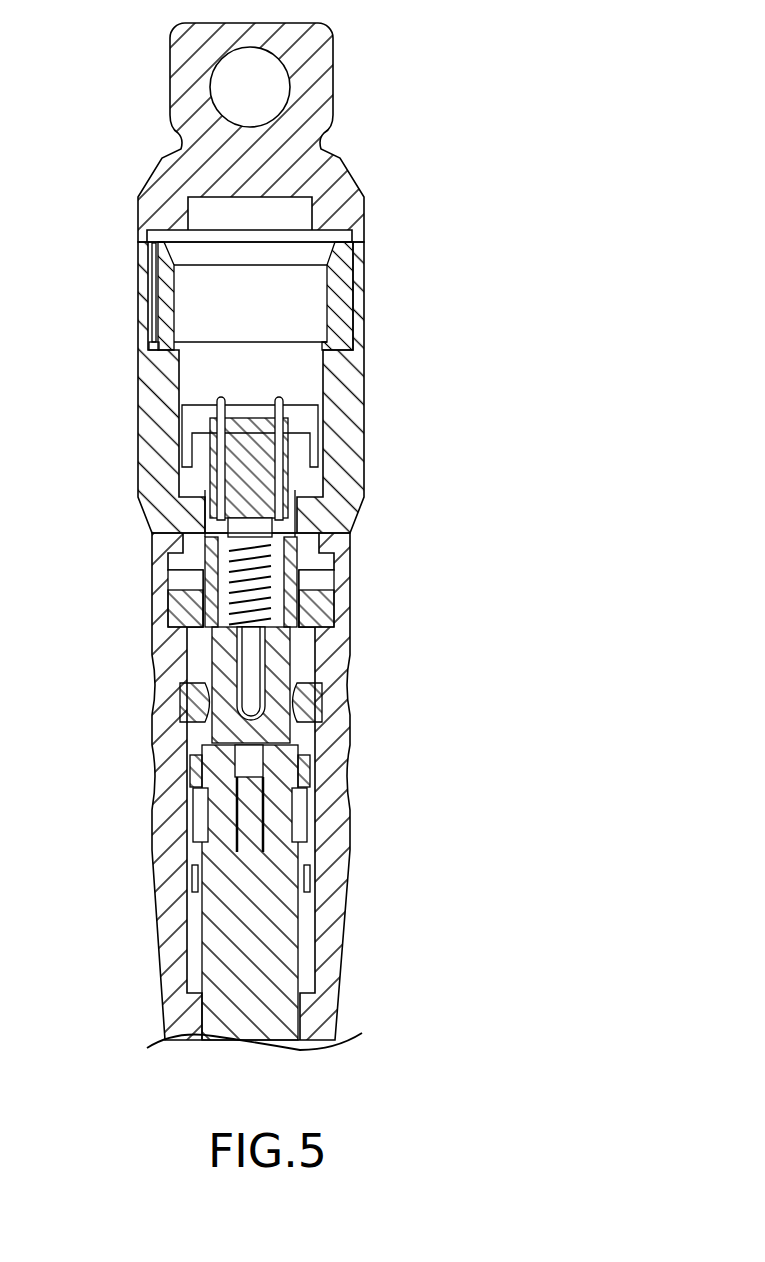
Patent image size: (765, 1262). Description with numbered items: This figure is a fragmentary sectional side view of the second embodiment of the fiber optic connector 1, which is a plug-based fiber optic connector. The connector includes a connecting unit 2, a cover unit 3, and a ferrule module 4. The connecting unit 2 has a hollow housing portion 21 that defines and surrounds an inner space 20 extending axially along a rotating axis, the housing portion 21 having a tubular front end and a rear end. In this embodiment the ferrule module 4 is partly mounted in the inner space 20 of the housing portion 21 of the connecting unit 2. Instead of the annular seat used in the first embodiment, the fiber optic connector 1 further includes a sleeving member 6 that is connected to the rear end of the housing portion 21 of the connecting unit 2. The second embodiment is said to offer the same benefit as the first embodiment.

The fiber optic connector 1 is at (308, 536).
The connecting unit 2 is at (290, 387).
The cover unit 3 is at (372, 74).
The ferrule module 4 is at (240, 473).
The sleeving member 6 is at (157, 738).
The inner space 20 is at (190, 380).
The housing portion 21 is at (352, 361).